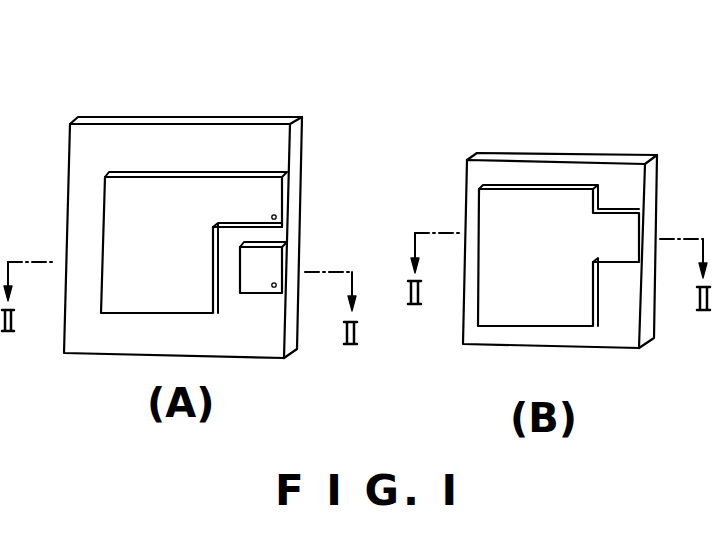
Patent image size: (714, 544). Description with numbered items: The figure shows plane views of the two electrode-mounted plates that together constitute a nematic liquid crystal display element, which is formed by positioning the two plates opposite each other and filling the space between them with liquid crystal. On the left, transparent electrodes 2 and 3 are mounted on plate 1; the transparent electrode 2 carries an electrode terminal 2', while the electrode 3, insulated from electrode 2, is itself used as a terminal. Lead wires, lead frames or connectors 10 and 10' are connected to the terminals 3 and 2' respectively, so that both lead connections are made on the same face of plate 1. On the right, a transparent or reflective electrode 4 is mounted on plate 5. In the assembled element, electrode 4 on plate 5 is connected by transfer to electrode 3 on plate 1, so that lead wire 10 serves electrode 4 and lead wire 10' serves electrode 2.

The plate 1 is at (132, 134).
The transparent electrode 2 is at (159, 242).
The electrode terminal 2' is at (310, 192).
The electrode 3 is at (257, 288).
The lead wire 10 is at (305, 327).
The lead wire 10' is at (325, 231).
The transparent or reflective electrode 4 is at (485, 225).
The plate 5 is at (545, 167).